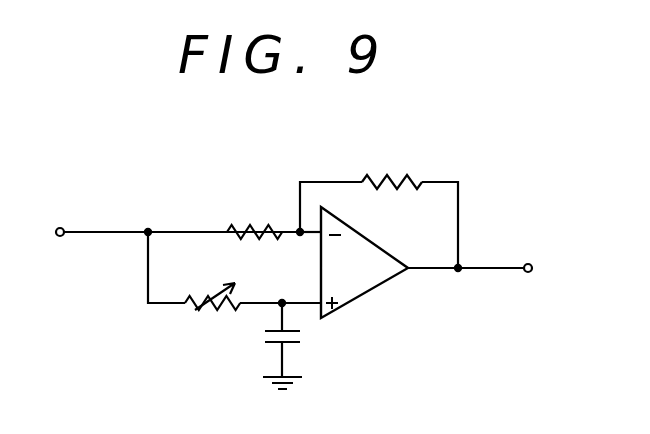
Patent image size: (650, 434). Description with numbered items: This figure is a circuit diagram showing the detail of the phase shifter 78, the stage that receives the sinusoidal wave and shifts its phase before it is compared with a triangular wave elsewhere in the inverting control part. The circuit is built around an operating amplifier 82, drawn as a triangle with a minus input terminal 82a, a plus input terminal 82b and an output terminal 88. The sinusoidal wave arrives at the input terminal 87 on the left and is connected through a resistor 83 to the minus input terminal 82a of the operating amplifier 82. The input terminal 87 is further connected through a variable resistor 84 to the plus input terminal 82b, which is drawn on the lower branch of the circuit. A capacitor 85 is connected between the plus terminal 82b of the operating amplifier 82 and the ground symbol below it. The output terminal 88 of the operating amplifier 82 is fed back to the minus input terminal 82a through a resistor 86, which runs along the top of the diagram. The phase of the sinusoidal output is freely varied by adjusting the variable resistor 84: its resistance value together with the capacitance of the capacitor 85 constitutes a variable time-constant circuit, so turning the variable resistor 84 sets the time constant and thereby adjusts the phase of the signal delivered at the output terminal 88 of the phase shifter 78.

The phase shifter 78 is at (465, 141).
The operating amplifier 82 is at (357, 275).
The minus input terminal 82a is at (311, 230).
The plus input terminal 82b is at (321, 304).
The resistor 83 is at (255, 226).
The variable resistor 84 is at (205, 295).
The capacitor 85 is at (273, 346).
The resistor 86 is at (385, 180).
The input terminal 87 is at (63, 222).
The output terminal 88 is at (531, 259).